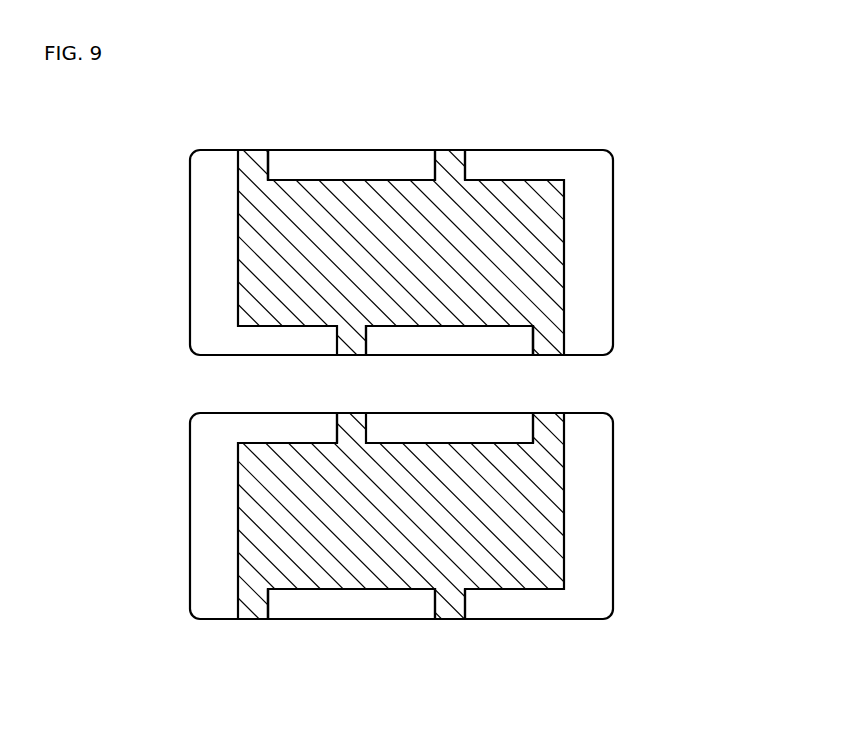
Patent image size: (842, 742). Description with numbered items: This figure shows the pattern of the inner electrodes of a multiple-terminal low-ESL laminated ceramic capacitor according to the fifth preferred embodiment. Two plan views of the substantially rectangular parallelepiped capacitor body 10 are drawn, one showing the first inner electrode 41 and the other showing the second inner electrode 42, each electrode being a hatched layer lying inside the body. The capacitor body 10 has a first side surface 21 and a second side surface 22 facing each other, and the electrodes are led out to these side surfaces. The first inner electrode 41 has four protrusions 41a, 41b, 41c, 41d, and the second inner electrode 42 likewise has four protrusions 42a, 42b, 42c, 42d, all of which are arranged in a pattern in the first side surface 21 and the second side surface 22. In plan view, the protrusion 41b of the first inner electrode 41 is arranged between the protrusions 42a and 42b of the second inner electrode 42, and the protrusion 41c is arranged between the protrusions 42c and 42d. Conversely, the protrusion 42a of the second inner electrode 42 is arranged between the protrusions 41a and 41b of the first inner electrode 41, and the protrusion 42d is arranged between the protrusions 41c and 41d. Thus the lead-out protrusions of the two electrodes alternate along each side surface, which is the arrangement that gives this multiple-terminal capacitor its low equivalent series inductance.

The capacitor body 10 is at (624, 228).
The first side surface 21 is at (395, 150).
The second side surface 22 is at (213, 357).
The first inner electrode 41 is at (358, 178).
The protrusion 41a is at (278, 150).
The protrusion 41b is at (467, 173).
The protrusion 41c is at (367, 338).
The protrusion 41d is at (565, 333).
The second inner electrode 42 is at (303, 592).
The protrusion 42a is at (336, 428).
The protrusion 42b is at (531, 420).
The protrusion 42c is at (268, 608).
The protrusion 42d is at (467, 603).